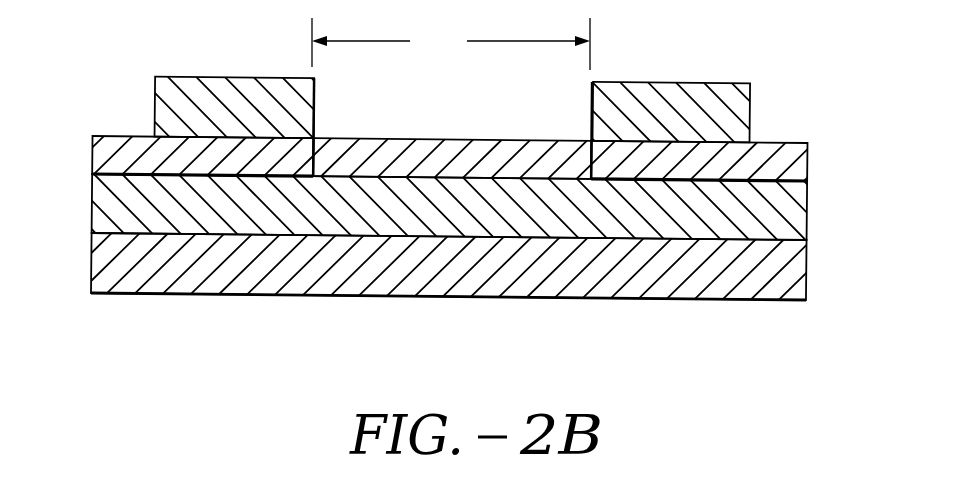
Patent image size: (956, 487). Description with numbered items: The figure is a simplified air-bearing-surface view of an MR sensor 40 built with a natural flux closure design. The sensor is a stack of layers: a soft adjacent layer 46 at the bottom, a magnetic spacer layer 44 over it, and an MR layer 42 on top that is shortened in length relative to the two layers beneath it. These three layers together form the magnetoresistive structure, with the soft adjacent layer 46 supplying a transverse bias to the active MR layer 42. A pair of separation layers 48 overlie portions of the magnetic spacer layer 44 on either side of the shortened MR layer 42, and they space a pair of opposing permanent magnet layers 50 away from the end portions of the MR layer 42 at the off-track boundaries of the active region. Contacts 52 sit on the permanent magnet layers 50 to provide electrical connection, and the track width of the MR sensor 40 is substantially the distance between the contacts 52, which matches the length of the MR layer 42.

The MR sensor 40 is at (473, 237).
The MR layer 42 is at (453, 138).
The magnetic spacer layer 44 is at (346, 235).
The soft adjacent layer 46 is at (488, 299).
The separation layers 48 is at (175, 175).
The permanent magnet layers 50 is at (124, 137).
The contacts 52 is at (228, 76).